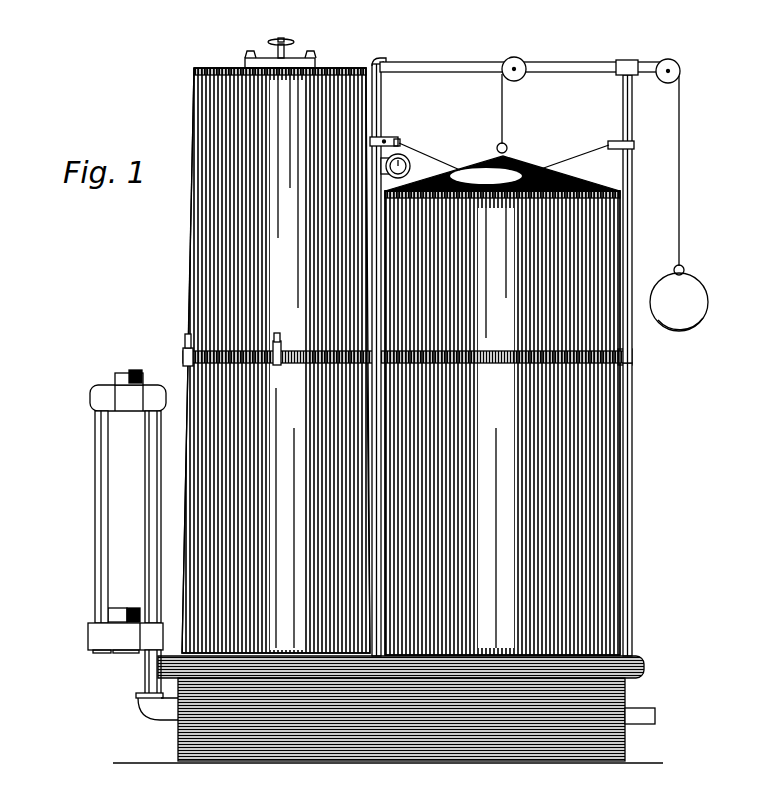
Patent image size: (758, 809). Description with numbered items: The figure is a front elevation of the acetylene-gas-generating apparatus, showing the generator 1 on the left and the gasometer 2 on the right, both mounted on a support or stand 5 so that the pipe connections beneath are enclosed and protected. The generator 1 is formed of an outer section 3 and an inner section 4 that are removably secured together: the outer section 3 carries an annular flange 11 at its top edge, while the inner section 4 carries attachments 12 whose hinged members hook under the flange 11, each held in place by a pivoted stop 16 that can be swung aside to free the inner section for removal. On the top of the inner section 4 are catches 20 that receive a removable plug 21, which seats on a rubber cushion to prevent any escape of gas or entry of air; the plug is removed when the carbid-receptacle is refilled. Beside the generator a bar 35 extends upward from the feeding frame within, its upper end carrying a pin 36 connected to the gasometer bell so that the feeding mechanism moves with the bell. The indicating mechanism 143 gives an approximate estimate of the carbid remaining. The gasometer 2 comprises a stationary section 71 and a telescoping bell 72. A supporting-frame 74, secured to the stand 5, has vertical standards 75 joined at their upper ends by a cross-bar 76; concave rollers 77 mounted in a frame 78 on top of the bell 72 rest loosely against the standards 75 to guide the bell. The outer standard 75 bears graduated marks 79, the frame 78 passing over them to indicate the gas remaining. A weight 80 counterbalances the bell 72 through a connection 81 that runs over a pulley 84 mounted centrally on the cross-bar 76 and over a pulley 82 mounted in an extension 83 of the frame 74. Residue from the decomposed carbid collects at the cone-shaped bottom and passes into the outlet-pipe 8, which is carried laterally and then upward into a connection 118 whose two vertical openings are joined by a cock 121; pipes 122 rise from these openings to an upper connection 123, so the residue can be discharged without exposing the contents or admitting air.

The generator 1 is at (253, 360).
The gasometer 2 is at (519, 405).
The outer section 3 is at (176, 462).
The inner section 4 is at (187, 218).
The support or stand 5 is at (388, 709).
The outlet-pipe 8 is at (158, 714).
The annular flange 11 is at (253, 356).
The attachments 12 is at (176, 347).
The stop 16 is at (179, 328).
The catches 20 is at (240, 51).
The removable plug 21 is at (282, 48).
The bar 35 is at (395, 150).
The pin 36 is at (380, 130).
The stationary section 71 is at (502, 509).
The bell or telescoping section 72 is at (502, 271).
The supporting-frame 74 is at (624, 350).
The vertical standards 75 is at (373, 92).
The cross-bar 76 is at (527, 64).
The concave rollers 77 is at (392, 132).
The frame 78 is at (430, 150).
The graduated marks 79 is at (624, 246).
The weight 80 is at (692, 302).
The connection 81 is at (673, 182).
The pulley 82 is at (673, 64).
The extension 83 is at (635, 68).
The pulley 84 is at (508, 74).
The connection 118 is at (82, 629).
The cock 121 is at (122, 367).
The pipes 122 is at (95, 520).
The connection 123 is at (92, 388).
The indicating mechanism 143 is at (416, 166).